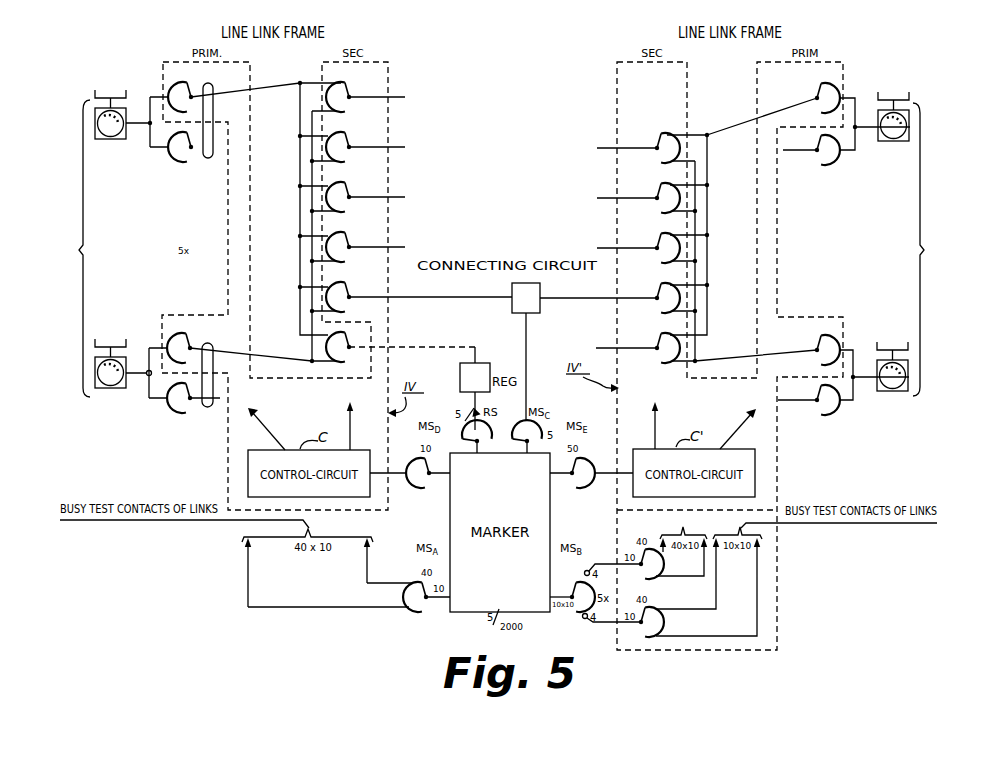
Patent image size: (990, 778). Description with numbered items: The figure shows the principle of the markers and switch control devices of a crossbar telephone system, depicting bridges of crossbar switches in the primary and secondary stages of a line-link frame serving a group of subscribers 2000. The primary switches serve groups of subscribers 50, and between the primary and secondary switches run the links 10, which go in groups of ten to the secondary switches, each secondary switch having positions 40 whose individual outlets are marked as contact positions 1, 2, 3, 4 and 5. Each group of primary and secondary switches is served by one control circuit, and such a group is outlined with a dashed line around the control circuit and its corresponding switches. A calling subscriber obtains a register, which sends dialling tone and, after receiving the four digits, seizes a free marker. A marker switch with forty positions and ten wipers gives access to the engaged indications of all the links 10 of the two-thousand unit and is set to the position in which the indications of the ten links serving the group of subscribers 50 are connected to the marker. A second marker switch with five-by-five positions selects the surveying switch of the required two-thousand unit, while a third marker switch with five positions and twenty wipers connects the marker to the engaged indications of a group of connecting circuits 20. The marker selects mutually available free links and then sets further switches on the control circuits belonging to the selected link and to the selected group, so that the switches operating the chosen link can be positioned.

The secondary switch contact position 1 is at (503, 116).
The secondary switch contact position 2 is at (503, 166).
The secondary switch contact position 3 is at (503, 216).
The secondary switch contact position 4 is at (503, 266).
The secondary switch contact position 5 is at (503, 316).
The links 10 is at (207, 239).
The connecting circuits 20 is at (520, 498).
The secondary switch positions 40 is at (503, 214).
The subscriber group 50 is at (502, 240).
The subscriber group 2000 is at (501, 243).